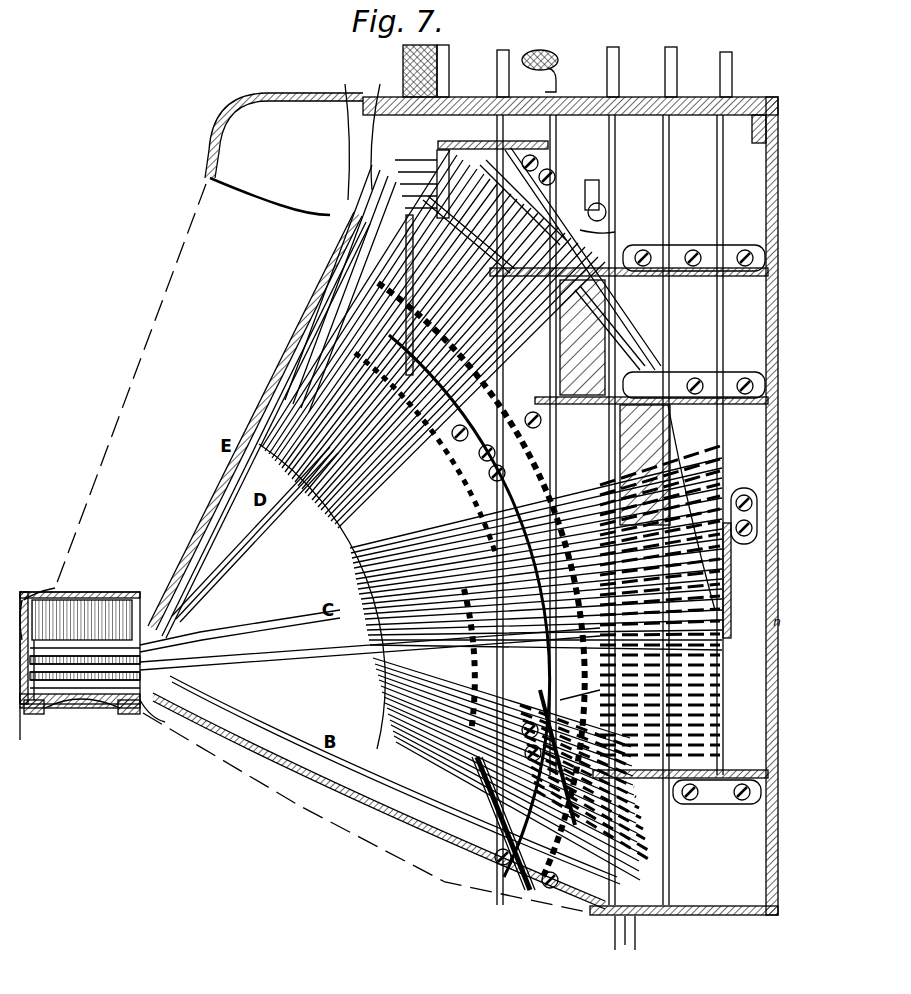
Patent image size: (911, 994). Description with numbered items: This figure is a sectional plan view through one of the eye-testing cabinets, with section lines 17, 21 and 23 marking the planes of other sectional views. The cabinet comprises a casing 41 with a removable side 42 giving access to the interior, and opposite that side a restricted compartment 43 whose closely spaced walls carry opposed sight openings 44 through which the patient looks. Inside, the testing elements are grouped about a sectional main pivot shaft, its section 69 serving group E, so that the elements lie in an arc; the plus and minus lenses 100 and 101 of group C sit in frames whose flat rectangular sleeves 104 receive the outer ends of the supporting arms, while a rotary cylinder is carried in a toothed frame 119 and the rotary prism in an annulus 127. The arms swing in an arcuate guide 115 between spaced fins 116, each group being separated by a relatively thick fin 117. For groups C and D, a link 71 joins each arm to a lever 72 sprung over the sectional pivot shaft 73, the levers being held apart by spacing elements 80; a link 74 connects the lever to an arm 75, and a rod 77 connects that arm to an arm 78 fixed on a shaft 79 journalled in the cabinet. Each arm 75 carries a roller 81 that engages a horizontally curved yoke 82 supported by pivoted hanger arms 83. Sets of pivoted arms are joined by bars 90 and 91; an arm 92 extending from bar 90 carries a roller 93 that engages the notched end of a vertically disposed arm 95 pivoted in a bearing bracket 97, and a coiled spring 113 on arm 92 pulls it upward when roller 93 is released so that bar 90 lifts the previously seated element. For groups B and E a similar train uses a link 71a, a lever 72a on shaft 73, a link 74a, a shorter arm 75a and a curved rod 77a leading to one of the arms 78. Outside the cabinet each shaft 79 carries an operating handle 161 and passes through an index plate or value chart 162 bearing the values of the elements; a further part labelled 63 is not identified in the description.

The section line 17 is at (31, 730).
The section line 21 is at (343, 718).
The section line 23 is at (90, 578).
The casing 41 is at (643, 116).
The removable side 42 is at (766, 345).
The restricted compartment 43 is at (30, 600).
The sight openings 44 is at (100, 620).
The bracket 63 is at (735, 805).
The shaft section 69 is at (300, 335).
The link 71 is at (290, 355).
The link 71a is at (300, 300).
The lever 72 is at (300, 228).
The lever 72a is at (310, 262).
The pivot shaft 73 is at (572, 828).
The link 74 is at (416, 357).
The link 74a is at (300, 205).
The arm 75 is at (541, 347).
The arm 75a is at (360, 170).
The rod 77 is at (715, 730).
The curved rod 77a is at (360, 160).
The arm 78 is at (435, 160).
The shaft 79 is at (497, 128).
The spacing elements 80 is at (560, 800).
The roller 81 is at (700, 500).
The yoke 82 is at (700, 480).
The hanger arms 83 is at (546, 342).
The bar 90 is at (694, 364).
The bar 91 is at (640, 330).
The arm 92 is at (615, 232).
The roller 93 is at (680, 397).
The arm 95 is at (606, 210).
The bearing bracket 97 is at (600, 180).
The plus lens 100 is at (100, 710).
The minus lens 101 is at (152, 715).
The sleeve 104 is at (180, 638).
The coiled spring 113 is at (600, 218).
The arcuate guide 115 is at (352, 605).
The fins 116 is at (320, 500).
The fin 117 is at (268, 380).
The frame 119 is at (40, 686).
The annulus 127 is at (112, 600).
The operating handle 161 is at (503, 52).
The index plate 162 is at (760, 97).